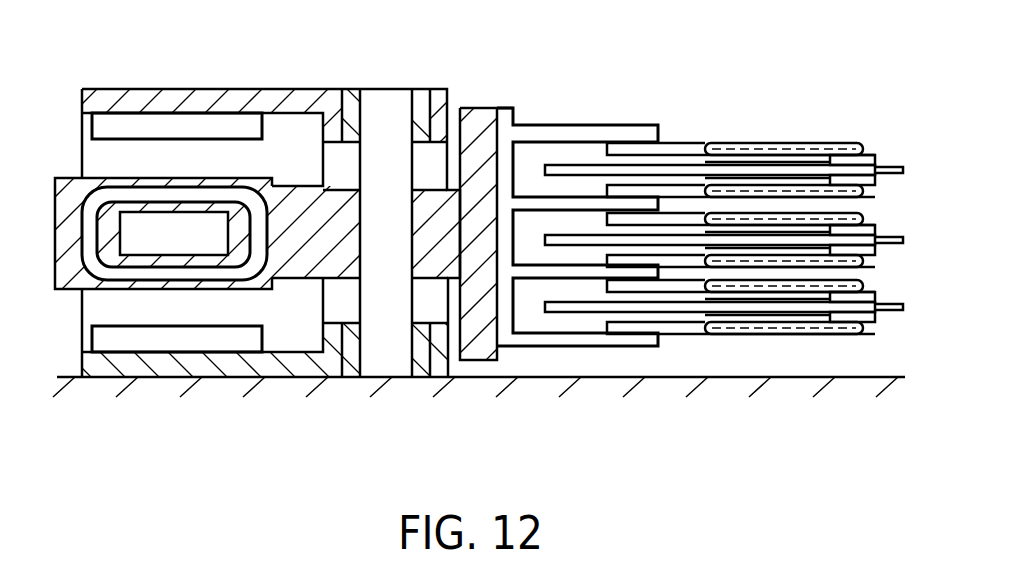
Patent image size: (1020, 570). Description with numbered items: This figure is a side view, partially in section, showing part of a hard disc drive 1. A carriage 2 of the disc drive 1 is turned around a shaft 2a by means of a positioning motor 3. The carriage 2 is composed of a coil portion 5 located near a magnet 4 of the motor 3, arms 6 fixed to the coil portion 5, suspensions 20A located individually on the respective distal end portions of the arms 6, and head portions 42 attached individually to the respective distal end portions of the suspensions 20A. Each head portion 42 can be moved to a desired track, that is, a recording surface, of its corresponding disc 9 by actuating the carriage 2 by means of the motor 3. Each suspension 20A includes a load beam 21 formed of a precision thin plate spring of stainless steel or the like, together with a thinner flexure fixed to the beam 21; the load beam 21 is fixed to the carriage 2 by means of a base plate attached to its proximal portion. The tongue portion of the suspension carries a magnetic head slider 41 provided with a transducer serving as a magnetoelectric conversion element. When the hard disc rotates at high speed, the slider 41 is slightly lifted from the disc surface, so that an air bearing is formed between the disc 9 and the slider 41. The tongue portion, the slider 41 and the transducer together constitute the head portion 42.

The hard disc drive 1 is at (713, 73).
The carriage 2 is at (509, 105).
The shaft 2a is at (388, 106).
The positioning motor 3 is at (281, 87).
The magnet 4 is at (112, 124).
The coil portion 5 is at (232, 182).
The arms 6 is at (565, 124).
The disc 9 is at (583, 170).
The suspension 20A is at (790, 184).
The load beam 21 is at (745, 144).
The magnetic head slider 41 is at (849, 154).
The head portion 42 is at (878, 152).